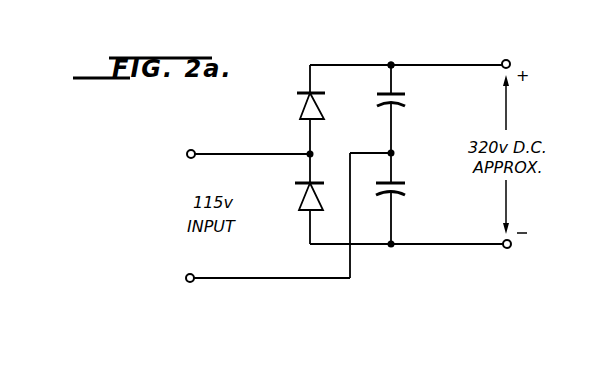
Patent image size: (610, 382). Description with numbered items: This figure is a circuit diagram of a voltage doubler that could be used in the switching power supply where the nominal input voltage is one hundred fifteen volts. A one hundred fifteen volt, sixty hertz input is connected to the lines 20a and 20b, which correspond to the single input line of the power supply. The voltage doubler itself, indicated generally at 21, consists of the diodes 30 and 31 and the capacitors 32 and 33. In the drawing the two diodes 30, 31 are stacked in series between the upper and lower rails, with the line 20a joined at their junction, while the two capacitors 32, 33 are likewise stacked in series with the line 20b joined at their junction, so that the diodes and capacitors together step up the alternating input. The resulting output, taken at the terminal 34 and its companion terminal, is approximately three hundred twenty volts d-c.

The input line 20a is at (263, 132).
The input line 20b is at (268, 264).
The voltage doubler circuit 21 is at (401, 62).
The diode 30 is at (319, 107).
The diode 31 is at (318, 196).
The capacitor 32 is at (406, 102).
The capacitor 33 is at (396, 197).
The output terminal 34 is at (510, 61).